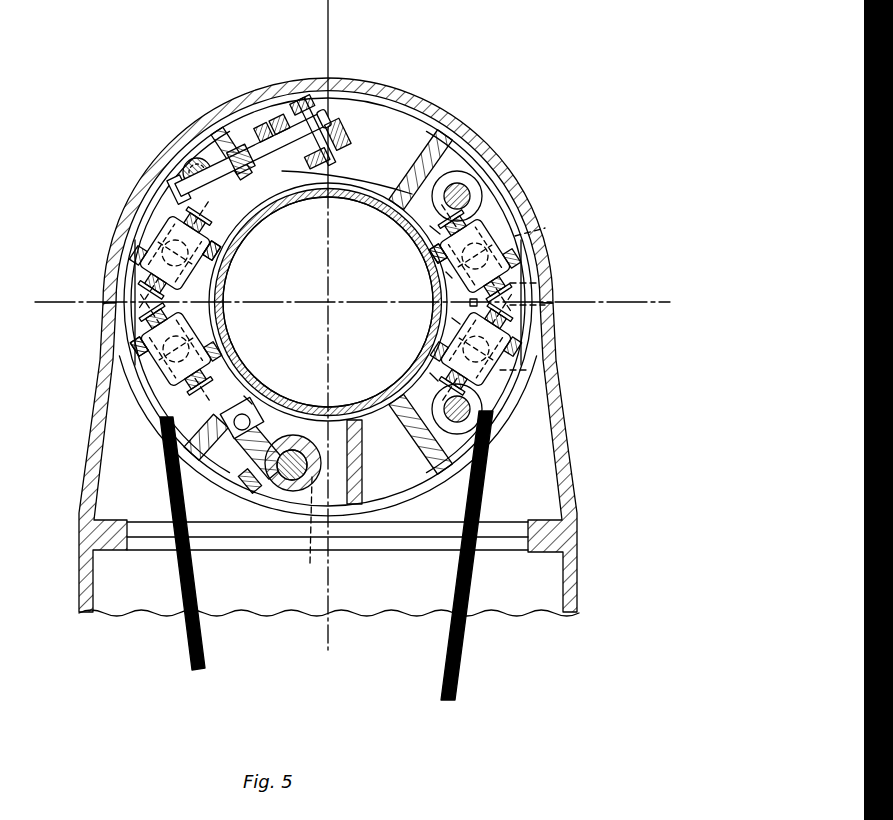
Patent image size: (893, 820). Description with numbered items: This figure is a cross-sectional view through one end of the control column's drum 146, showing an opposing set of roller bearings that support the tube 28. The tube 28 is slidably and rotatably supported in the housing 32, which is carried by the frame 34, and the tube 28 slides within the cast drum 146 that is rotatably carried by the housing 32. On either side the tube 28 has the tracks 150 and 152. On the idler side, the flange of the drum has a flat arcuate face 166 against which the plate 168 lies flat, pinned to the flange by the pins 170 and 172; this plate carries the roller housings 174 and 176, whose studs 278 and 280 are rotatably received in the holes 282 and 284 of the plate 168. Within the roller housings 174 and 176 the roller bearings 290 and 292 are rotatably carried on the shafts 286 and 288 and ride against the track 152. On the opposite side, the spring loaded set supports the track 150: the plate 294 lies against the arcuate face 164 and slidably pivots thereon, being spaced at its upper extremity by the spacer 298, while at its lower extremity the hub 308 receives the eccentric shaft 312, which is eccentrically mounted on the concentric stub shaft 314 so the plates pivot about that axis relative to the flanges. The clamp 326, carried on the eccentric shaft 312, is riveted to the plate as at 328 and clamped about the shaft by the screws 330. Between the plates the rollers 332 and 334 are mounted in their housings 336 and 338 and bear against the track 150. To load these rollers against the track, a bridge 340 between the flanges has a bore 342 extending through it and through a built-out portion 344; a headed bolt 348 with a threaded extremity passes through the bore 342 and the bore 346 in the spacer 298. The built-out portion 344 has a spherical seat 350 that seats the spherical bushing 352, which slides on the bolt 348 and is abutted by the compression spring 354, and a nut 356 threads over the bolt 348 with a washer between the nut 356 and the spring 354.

The tube 28 is at (227, 337).
The housing 32 is at (567, 448).
The frame 34 is at (578, 581).
The drum 146 is at (405, 115).
The track 150 is at (213, 295).
The track 152 is at (455, 320).
The flat arcuate face 164 is at (198, 150).
The flat arcuate face 166 is at (452, 163).
The plate 168 is at (483, 205).
The pin 170 is at (470, 190).
The pin 172 is at (480, 412).
The roller housing 174 is at (520, 262).
The roller housing 176 is at (517, 352).
The stud 278 is at (545, 230).
The stud 280 is at (545, 305).
The hole 282 is at (540, 283).
The hole 284 is at (520, 370).
The shaft 286 is at (430, 230).
The shaft 288 is at (433, 377).
The roller bearing 290 is at (450, 275).
The roller bearing 292 is at (470, 302).
The plate 294 is at (140, 308).
The spacer 298 is at (187, 175).
The hub 308 is at (293, 490).
The eccentric shaft 312 is at (277, 483).
The stub shaft 314 is at (309, 531).
The clamp 326 is at (240, 413).
The rivet 328 is at (247, 398).
The screw 330 is at (257, 488).
The roller 332 is at (142, 230).
The roller 334 is at (140, 360).
The housing 336 is at (138, 252).
The housing 338 is at (143, 347).
The bridge 340 is at (224, 133).
The bore 342 is at (240, 150).
The built-out portion 344 is at (262, 128).
The bore 346 is at (182, 172).
The headed bolt 348 is at (203, 157).
The spherical seat 350 is at (282, 125).
The spherical bushing 352 is at (270, 128).
The compression spring 354 is at (330, 158).
The nut 356 is at (348, 135).